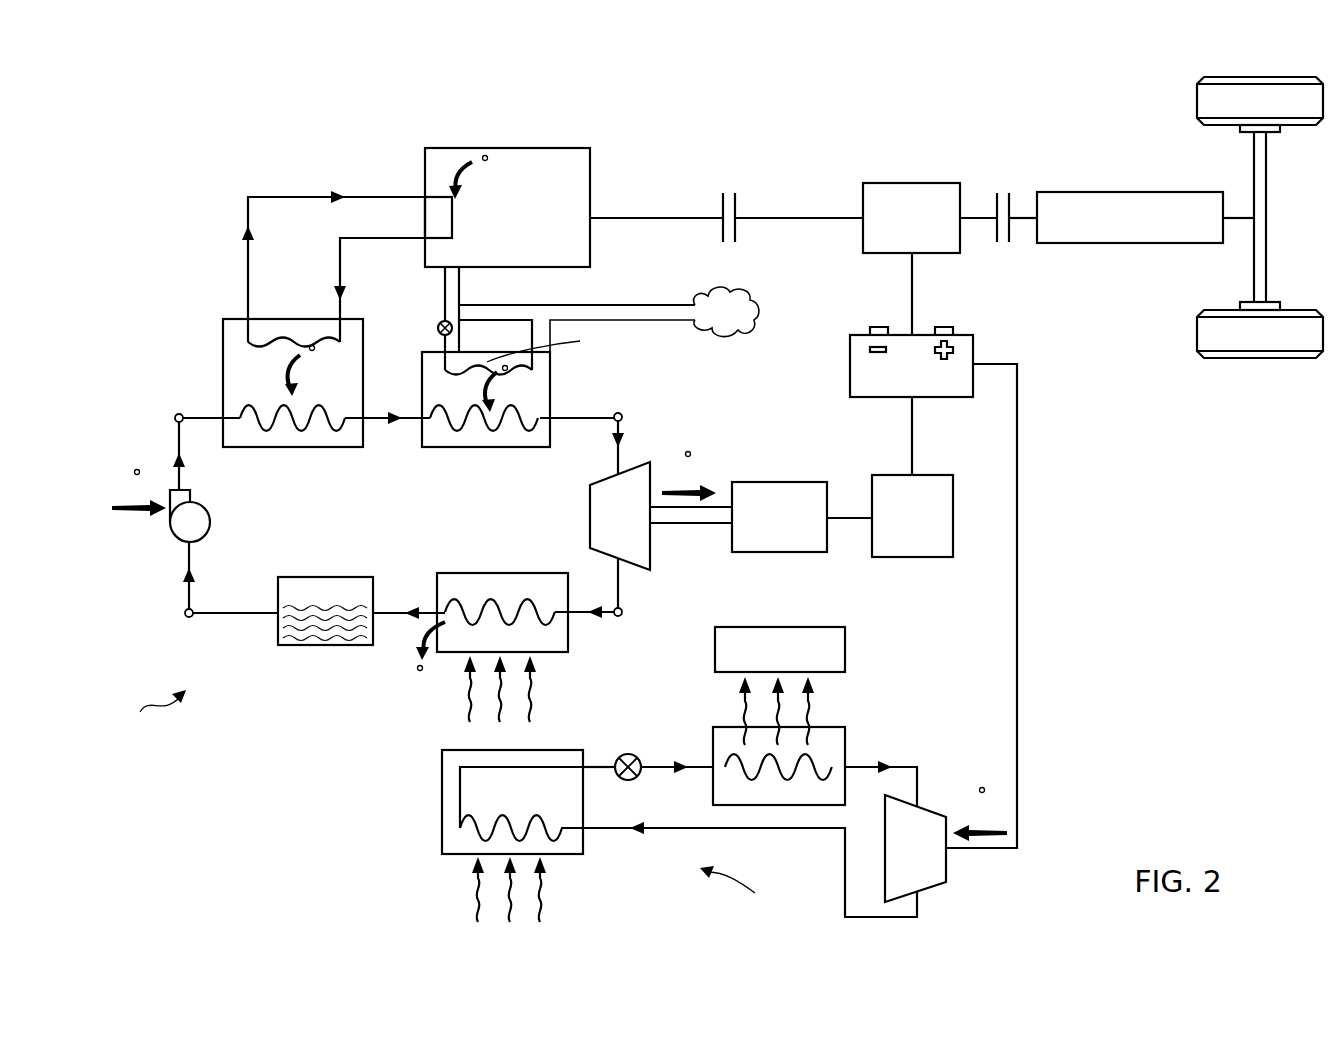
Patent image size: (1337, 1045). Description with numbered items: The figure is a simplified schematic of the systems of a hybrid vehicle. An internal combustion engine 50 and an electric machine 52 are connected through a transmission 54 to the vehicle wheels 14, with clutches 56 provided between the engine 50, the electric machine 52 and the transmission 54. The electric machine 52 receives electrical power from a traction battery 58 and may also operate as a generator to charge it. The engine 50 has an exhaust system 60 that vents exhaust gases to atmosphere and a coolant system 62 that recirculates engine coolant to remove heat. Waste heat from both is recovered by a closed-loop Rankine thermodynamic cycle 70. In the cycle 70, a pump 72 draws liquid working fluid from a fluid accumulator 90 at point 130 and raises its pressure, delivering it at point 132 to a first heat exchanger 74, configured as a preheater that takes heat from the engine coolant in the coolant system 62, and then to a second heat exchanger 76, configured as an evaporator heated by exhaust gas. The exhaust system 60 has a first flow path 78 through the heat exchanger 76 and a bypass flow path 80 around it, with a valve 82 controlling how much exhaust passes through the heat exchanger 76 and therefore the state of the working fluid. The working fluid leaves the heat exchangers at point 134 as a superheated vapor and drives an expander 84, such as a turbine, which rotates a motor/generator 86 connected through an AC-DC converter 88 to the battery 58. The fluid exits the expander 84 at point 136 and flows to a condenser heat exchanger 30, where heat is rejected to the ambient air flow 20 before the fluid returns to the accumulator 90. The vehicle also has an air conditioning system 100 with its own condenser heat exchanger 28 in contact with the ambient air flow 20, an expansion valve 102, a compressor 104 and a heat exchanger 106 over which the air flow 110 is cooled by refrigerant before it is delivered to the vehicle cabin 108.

The wheels 14 is at (1218, 358).
The ambient air flow 20 is at (522, 789).
The first heat exchanger 28 is at (442, 828).
The heat exchanger 30 is at (490, 573).
The internal combustion engine 50 is at (590, 170).
The electric machine 52 is at (878, 183).
The transmission 54 is at (1118, 192).
The clutches 56 is at (735, 242).
The traction battery 58 is at (850, 350).
The exhaust system 60 is at (598, 305).
The coolant system 62 is at (288, 195).
The thermodynamic cycle 70 is at (154, 721).
The pump 72 is at (210, 522).
The first heat exchanger 74 is at (318, 447).
The second heat exchanger 76 is at (470, 447).
The first flow path 78 is at (549, 343).
The bypass flow path 80 is at (490, 305).
The valve 82 is at (437, 328).
The expander 84 is at (650, 462).
The motor/generator 86 is at (778, 482).
The AC-DC converter 88 is at (953, 510).
The fluid accumulator 90 is at (320, 577).
The air conditioning system 100 is at (751, 886).
The expansion device 102 is at (622, 754).
The compressor 104 is at (930, 812).
The heat exchanger 106 is at (845, 745).
The vehicle cabin 108 is at (790, 627).
The air flow 110 is at (735, 700).
The point 130 is at (216, 628).
The point 132 is at (196, 437).
The point 134 is at (623, 429).
The point 136 is at (628, 627).